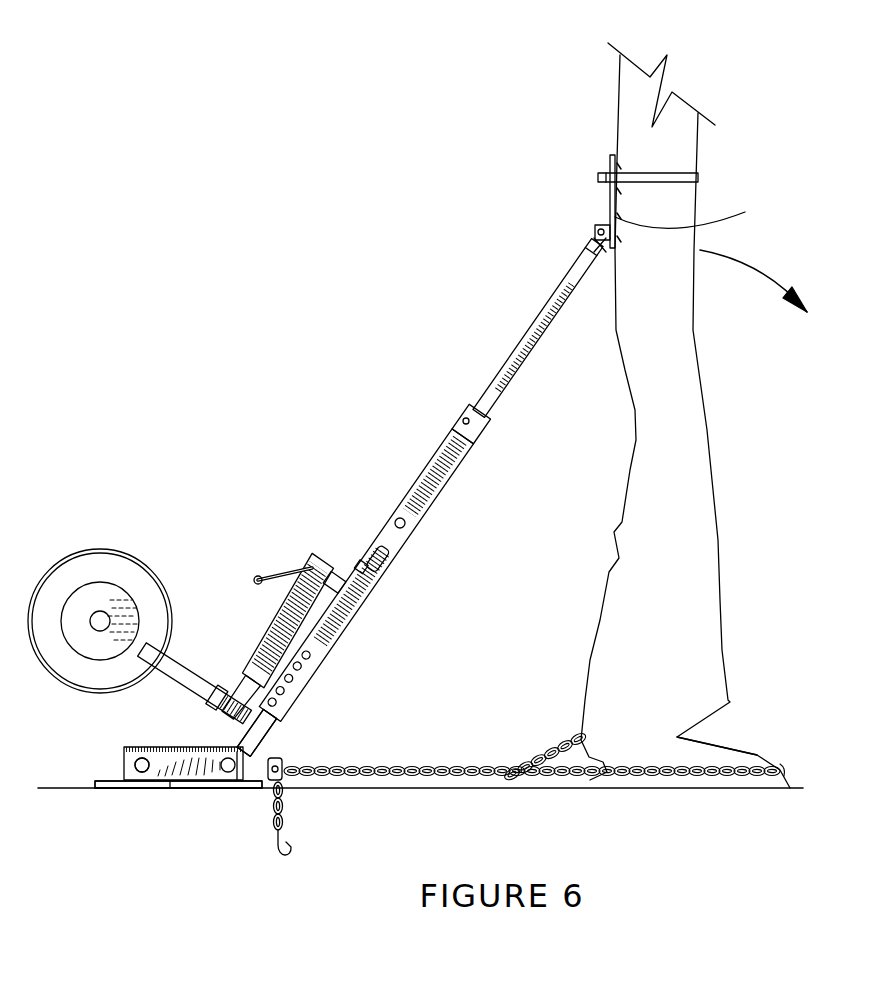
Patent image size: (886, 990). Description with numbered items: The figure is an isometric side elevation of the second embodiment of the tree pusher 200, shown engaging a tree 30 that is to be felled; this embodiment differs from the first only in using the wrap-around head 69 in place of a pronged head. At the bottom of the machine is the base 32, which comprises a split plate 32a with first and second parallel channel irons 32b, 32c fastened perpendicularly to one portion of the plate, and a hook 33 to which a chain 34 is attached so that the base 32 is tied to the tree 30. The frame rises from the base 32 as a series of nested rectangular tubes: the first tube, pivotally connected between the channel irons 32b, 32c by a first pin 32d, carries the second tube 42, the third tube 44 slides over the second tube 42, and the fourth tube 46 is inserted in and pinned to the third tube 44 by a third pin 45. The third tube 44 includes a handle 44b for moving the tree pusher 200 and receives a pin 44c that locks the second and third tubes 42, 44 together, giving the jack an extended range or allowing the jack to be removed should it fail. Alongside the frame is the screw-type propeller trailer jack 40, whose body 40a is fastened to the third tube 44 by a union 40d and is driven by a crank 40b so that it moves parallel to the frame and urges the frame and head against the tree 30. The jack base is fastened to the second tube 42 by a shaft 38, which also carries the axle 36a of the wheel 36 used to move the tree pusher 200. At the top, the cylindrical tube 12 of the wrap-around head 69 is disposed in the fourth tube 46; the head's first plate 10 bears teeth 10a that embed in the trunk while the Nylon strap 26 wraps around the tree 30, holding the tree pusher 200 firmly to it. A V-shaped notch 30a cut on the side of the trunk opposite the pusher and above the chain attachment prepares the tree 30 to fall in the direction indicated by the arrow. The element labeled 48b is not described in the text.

The first plate 10 is at (612, 203).
The teeth 10a is at (701, 208).
The cylindrical tube 12 is at (557, 290).
The Nylon strap 26 is at (688, 174).
The tree 30 is at (700, 390).
The V-shaped notch 30a is at (717, 730).
The base 32 is at (253, 760).
The split plate 32a is at (162, 788).
The first channel iron 32b is at (172, 763).
The second channel iron 32c is at (200, 778).
The first pin 32d is at (137, 773).
The hook 33 is at (293, 770).
The chain 34 is at (705, 780).
The wheel 36 is at (135, 557).
The axle 36a is at (103, 612).
The shaft 38 is at (187, 693).
The screw-type propeller trailer jack 40 is at (305, 557).
The body 40a is at (270, 630).
The crank 40b is at (290, 566).
The union 40d is at (338, 578).
The second rectangular tube 42 is at (265, 722).
The third rectangular tube 44 is at (347, 613).
The handle 44b is at (405, 523).
The pin 44c is at (387, 556).
The third pin 45 is at (469, 421).
The fourth rectangular tube 46 is at (505, 365).
The tree bracket 48b is at (582, 250).
The wrap-around head 69 is at (520, 148).
The tree pusher (second embodiment) 200 is at (410, 458).